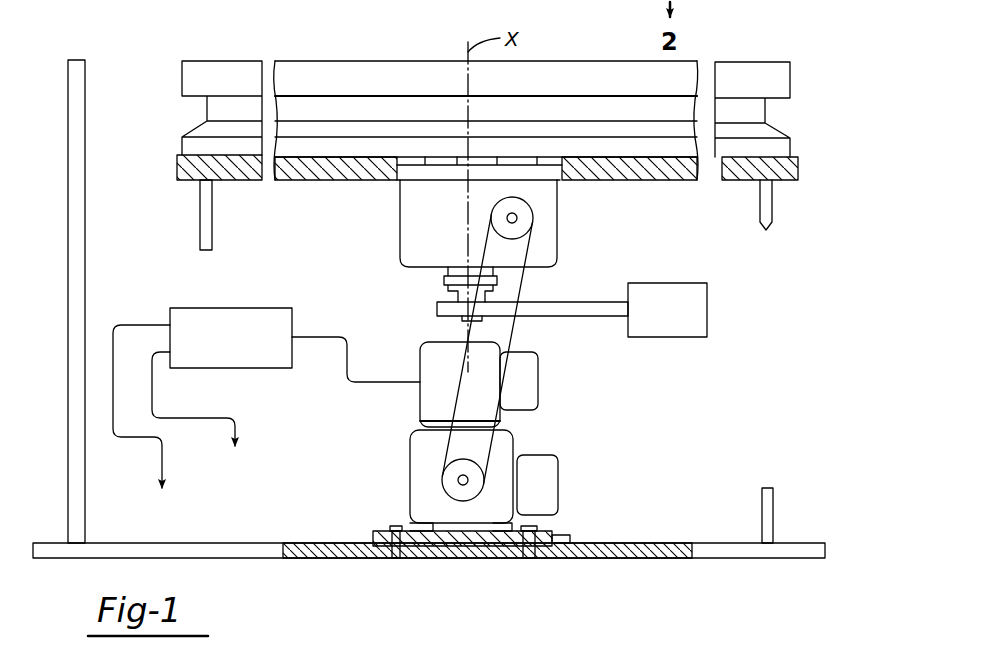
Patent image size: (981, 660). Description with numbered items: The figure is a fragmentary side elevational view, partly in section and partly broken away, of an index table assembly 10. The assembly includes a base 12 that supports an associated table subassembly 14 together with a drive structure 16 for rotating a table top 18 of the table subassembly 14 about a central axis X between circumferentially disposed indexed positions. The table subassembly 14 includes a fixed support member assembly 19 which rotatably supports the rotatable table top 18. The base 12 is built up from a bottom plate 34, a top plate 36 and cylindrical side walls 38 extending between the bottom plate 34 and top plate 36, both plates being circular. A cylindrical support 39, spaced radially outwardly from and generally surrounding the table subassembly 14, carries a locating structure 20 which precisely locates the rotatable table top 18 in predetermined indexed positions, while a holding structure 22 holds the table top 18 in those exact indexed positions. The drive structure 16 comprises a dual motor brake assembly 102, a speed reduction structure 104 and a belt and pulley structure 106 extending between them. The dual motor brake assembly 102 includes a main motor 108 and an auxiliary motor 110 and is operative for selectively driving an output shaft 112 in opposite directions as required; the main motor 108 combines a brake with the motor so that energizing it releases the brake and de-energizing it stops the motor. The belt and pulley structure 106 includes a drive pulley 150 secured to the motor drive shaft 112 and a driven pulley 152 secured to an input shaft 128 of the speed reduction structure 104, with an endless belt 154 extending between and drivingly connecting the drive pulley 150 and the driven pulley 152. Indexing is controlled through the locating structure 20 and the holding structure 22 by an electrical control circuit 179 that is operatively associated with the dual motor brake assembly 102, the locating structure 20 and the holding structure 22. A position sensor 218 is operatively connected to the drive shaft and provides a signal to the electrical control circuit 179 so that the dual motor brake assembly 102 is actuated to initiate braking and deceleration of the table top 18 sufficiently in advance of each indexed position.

The index table assembly 10 is at (175, 238).
The base 12 is at (745, 460).
The table subassembly 14 is at (193, 112).
The drive structure 16 is at (471, 332).
The table top 18 is at (770, 78).
The fixed support member assembly 19 is at (185, 144).
The locating structure 20 is at (260, 472).
The holding structure 22 is at (169, 519).
The bottom plate 34 is at (625, 545).
The top plate 36 is at (650, 182).
The cylindrical side wall 38 is at (200, 213).
The cylindrical support 39 is at (68, 333).
The dual motor brake assembly 102 is at (474, 450).
The speed reduction structure 104 is at (420, 214).
The belt and pulley structure 106 is at (517, 327).
The main motor 108 is at (505, 450).
The auxiliary motor 110 is at (485, 385).
The output shaft 112 is at (460, 481).
The input shaft 128 is at (517, 222).
The drive pulley 150 is at (458, 500).
The driven pulley 152 is at (513, 207).
The endless belt 154 is at (467, 330).
The electrical control circuit 179 is at (227, 368).
The position sensor 218 is at (650, 283).